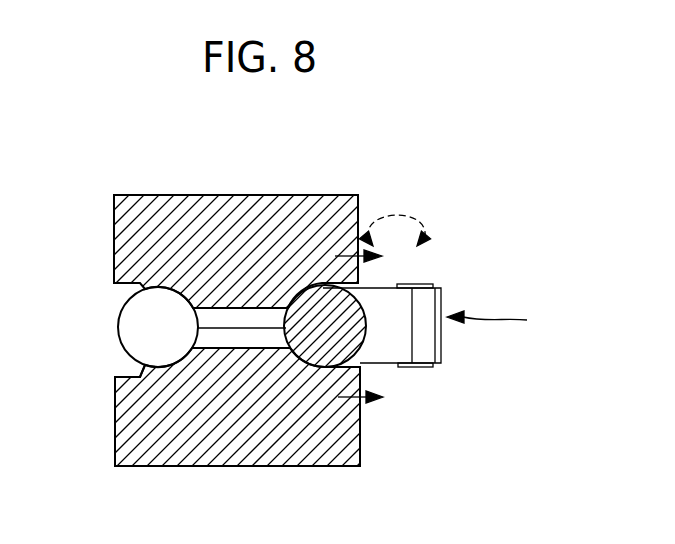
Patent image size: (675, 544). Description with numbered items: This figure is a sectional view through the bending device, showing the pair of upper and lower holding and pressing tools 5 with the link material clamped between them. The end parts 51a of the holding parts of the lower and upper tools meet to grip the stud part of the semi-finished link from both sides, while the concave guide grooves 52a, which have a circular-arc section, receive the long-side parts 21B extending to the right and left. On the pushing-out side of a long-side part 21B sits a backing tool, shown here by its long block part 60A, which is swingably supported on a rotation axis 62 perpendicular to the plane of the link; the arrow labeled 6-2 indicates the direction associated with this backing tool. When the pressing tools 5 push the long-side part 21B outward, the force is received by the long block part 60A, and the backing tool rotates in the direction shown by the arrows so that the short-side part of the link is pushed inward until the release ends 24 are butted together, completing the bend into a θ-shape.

The holding and pressing tool 5 is at (258, 202).
The release end 24 is at (138, 322).
The long-side part 21B is at (324, 296).
The end part 51a is at (228, 316).
The concave guide groove 52a is at (133, 377).
The long block part 60A is at (393, 352).
The rotation axis 62 is at (413, 284).
The direction of force 6-2 is at (513, 322).